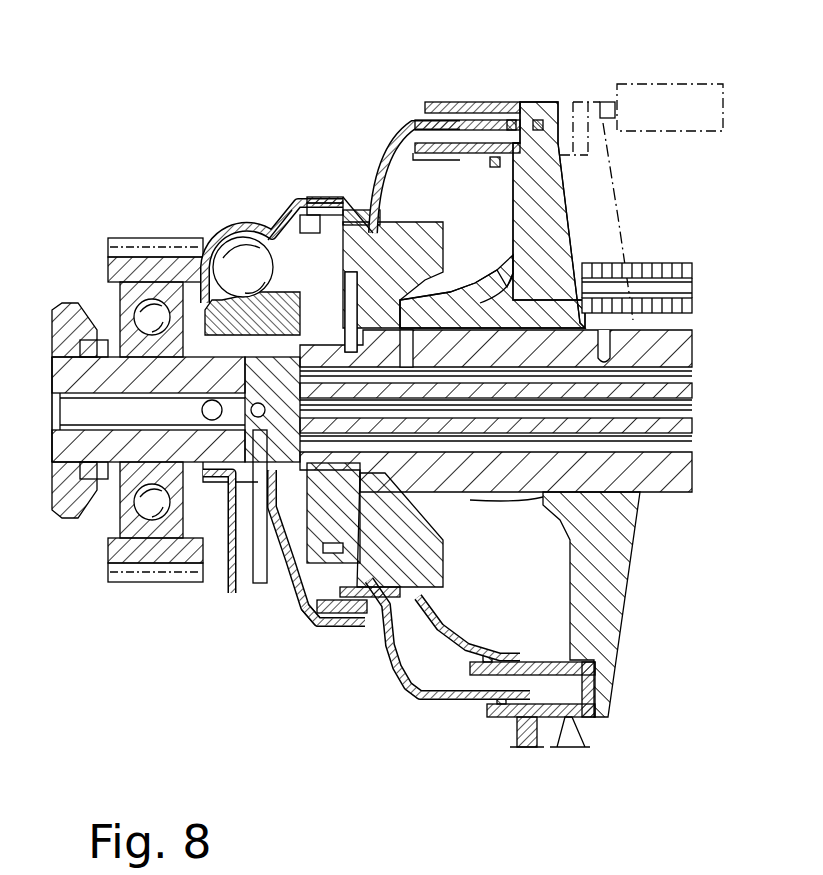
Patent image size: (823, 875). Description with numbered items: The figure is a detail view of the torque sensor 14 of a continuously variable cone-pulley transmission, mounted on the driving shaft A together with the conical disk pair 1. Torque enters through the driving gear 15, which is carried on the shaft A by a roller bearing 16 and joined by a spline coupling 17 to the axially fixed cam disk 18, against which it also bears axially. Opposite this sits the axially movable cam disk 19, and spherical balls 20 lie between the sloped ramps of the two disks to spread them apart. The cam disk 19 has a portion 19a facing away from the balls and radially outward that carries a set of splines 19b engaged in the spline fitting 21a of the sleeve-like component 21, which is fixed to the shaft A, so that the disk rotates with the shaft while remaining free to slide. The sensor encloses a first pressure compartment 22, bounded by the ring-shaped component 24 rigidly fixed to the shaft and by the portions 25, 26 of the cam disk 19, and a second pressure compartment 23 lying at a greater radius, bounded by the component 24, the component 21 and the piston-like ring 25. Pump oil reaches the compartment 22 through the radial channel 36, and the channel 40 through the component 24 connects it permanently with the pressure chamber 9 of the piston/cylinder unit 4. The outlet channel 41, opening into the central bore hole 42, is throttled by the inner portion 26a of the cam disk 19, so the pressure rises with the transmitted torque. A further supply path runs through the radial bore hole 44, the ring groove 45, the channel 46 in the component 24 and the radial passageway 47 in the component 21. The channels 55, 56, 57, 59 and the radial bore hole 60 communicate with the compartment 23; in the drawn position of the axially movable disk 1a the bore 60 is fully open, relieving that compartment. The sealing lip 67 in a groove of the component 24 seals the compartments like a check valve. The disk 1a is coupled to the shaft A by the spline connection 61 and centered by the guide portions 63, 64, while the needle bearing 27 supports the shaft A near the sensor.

The conical disk pair 1 is at (663, 652).
The axially movable conical disk 1a is at (560, 150).
The piston/cylinder unit 4 is at (432, 657).
The pressure chamber 9 is at (523, 643).
The torque sensor 14 is at (225, 598).
The driving gear 15 is at (133, 246).
The roller bearing 16 is at (110, 268).
The spline coupling 17 is at (207, 493).
The axially fixed cam disk 18 is at (222, 240).
The axially movable cam disk 19 is at (280, 233).
The portion of cam disk 19a is at (313, 196).
The set of splines 19b is at (340, 613).
The spherical balls 20 is at (253, 233).
The sleeve-like component 21 is at (478, 170).
The spline fitting 21a is at (343, 197).
The pressure compartment 22 is at (297, 233).
The pressure compartment 23 is at (375, 215).
The ring-shaped component 24 is at (445, 222).
The ring-shaped component 25 is at (297, 233).
The component of cam disk 26 is at (150, 300).
The inner portion of cam disk 26a is at (200, 330).
The needle bearing 27 is at (70, 340).
The radial channel 36 is at (228, 478).
The channel 40 is at (350, 217).
The outlet channel 41 is at (120, 460).
The central axial bore hole 42 is at (77, 460).
The radial bore hole 44 is at (285, 603).
The ring groove 45 is at (375, 470).
The channel 46 is at (422, 280).
The radial passageway 47 is at (420, 167).
The channel 55 is at (370, 600).
The channel 56 is at (245, 595).
The channel 57 is at (395, 302).
The channel 59 is at (523, 285).
The radial bore hole 60 is at (607, 342).
The spline connection 61 is at (507, 520).
The centering guide portion 63 is at (420, 490).
The centering guide portion 64 is at (558, 323).
The sealing lip 67 is at (302, 610).
The driving shaft A is at (190, 465).